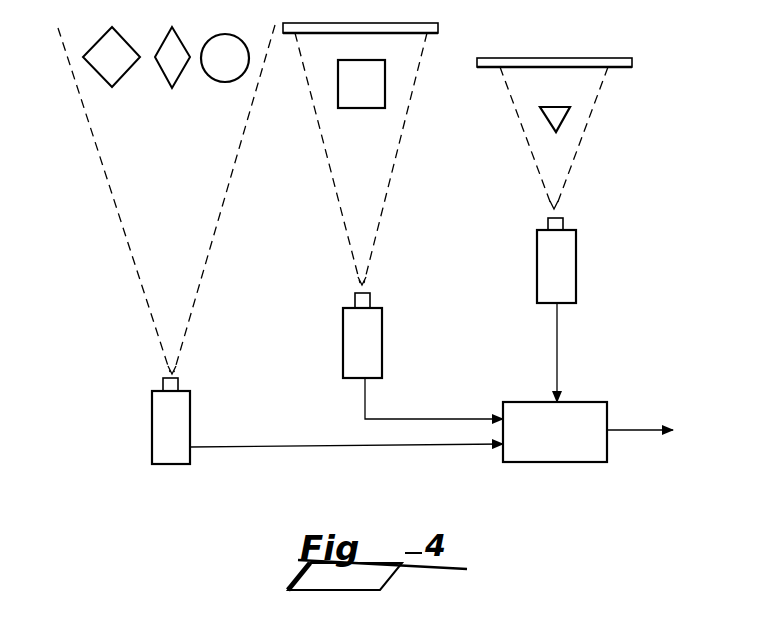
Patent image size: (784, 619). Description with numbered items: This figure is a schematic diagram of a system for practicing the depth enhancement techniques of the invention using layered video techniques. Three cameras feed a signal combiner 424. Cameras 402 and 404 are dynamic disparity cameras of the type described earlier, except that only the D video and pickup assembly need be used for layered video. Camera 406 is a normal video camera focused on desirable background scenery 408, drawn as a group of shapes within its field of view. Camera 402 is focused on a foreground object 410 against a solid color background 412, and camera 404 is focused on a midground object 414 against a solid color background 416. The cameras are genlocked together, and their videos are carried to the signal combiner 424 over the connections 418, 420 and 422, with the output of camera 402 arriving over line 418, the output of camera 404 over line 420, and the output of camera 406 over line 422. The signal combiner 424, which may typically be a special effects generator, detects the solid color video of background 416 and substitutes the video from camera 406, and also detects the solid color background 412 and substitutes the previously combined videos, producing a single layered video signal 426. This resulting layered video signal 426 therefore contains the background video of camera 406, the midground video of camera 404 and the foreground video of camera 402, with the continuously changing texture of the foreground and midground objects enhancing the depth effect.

The dynamic disparity camera 402 is at (576, 262).
The dynamic disparity camera 404 is at (382, 360).
The normal video camera 406 is at (190, 425).
The background scenery 408 is at (207, 77).
The foreground object 410 is at (564, 114).
The solid color background 412 is at (610, 67).
The midground object 414 is at (385, 78).
The solid color background 416 is at (403, 33).
The video signal line 418 is at (557, 365).
The video signal line 420 is at (403, 416).
The video signal line 422 is at (331, 447).
The signal combiner 424 is at (552, 462).
The layered video signal 426 is at (638, 432).